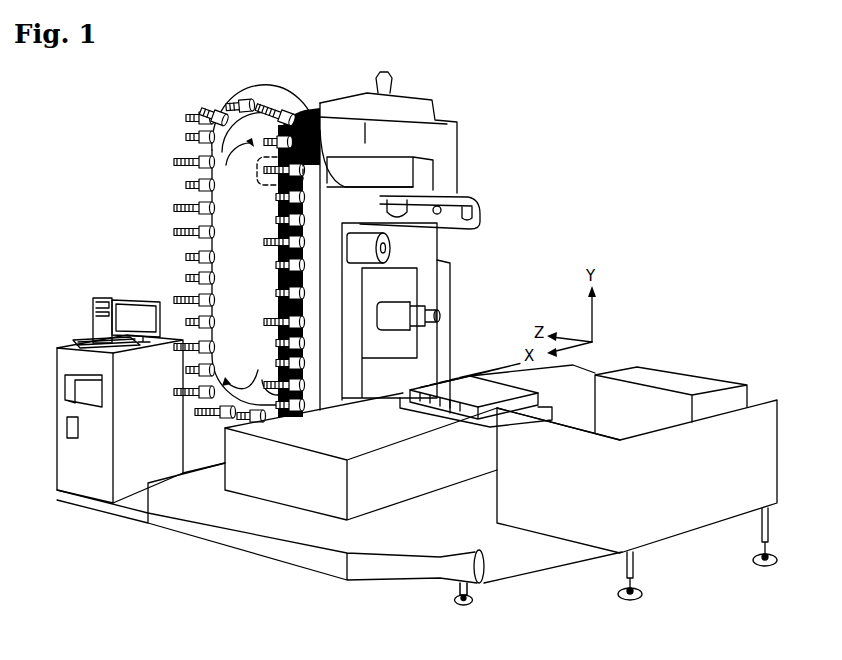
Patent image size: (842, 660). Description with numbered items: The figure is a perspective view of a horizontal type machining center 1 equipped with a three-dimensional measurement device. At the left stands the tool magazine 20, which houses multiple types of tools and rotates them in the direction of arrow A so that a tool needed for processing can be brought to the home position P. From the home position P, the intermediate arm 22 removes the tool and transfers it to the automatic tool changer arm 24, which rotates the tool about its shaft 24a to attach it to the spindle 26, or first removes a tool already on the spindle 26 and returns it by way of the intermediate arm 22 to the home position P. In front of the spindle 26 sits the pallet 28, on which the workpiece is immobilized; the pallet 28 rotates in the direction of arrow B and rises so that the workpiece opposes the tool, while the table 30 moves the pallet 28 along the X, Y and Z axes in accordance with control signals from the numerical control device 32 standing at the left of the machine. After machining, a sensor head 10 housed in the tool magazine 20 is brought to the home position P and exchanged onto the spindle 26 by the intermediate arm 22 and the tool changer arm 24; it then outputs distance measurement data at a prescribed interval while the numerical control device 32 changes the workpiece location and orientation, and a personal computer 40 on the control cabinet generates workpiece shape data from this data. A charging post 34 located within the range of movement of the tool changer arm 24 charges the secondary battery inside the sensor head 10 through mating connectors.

The machining center 1 is at (138, 105).
The sensor head 10 is at (183, 280).
The tool magazine 20 is at (165, 222).
The intermediate arm 22 is at (413, 173).
The automatic tool changer (ATC) arm 24 is at (478, 216).
The shaft 24a is at (450, 207).
The spindle 26 is at (420, 305).
The pallet 28 is at (473, 383).
The table 30 is at (287, 488).
The numerical control (NC) device 32 is at (60, 348).
The charging post 34 is at (392, 249).
The personal computer 40 is at (100, 294).
The arrow A is at (212, 147).
The arrow B is at (513, 395).
The home position P is at (250, 177).